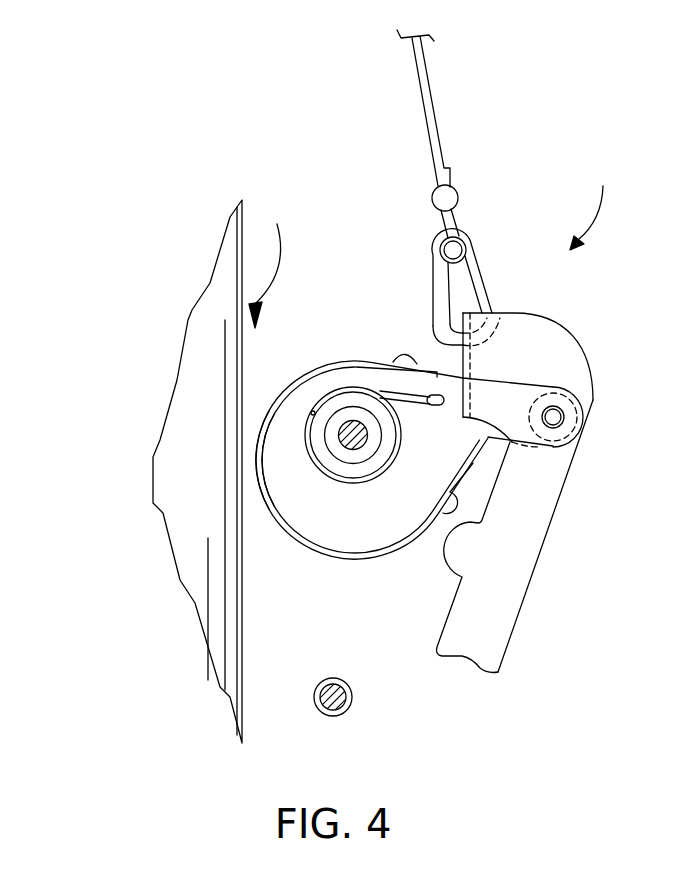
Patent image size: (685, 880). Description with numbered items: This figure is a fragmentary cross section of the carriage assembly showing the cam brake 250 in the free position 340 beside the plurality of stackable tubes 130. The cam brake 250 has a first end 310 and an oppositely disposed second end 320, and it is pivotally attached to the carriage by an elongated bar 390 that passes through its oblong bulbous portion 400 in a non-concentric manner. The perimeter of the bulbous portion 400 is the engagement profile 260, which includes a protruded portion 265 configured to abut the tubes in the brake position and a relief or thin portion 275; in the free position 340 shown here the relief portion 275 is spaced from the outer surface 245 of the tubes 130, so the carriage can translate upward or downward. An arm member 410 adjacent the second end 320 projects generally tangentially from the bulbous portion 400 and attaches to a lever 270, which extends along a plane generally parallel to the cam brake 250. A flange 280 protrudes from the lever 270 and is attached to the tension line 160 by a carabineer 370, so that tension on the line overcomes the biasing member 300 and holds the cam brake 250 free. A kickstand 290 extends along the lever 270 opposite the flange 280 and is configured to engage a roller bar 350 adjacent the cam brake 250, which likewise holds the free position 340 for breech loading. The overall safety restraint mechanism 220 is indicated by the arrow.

The stackable tubes 130 is at (208, 332).
The tension line 160 is at (424, 94).
The latch assembly 220 is at (549, 415).
The outer surface 245 is at (172, 431).
The cam brake 250 is at (280, 478).
The engagement profile 260 is at (288, 542).
The protruded portion 265 is at (327, 558).
The lever 270 is at (570, 368).
The relief portion 275 is at (252, 468).
The flange 280 is at (515, 318).
The kickstand 290 is at (517, 570).
The biasing member 300 is at (353, 388).
The first end 310 is at (277, 448).
The second end 320 is at (567, 427).
The free position 340 is at (276, 262).
The roller bar 350 is at (349, 712).
The carabineer 370 is at (475, 268).
The elongated bar 390 is at (365, 420).
The bulbous portion 400 is at (392, 502).
The arm member 410 is at (513, 393).